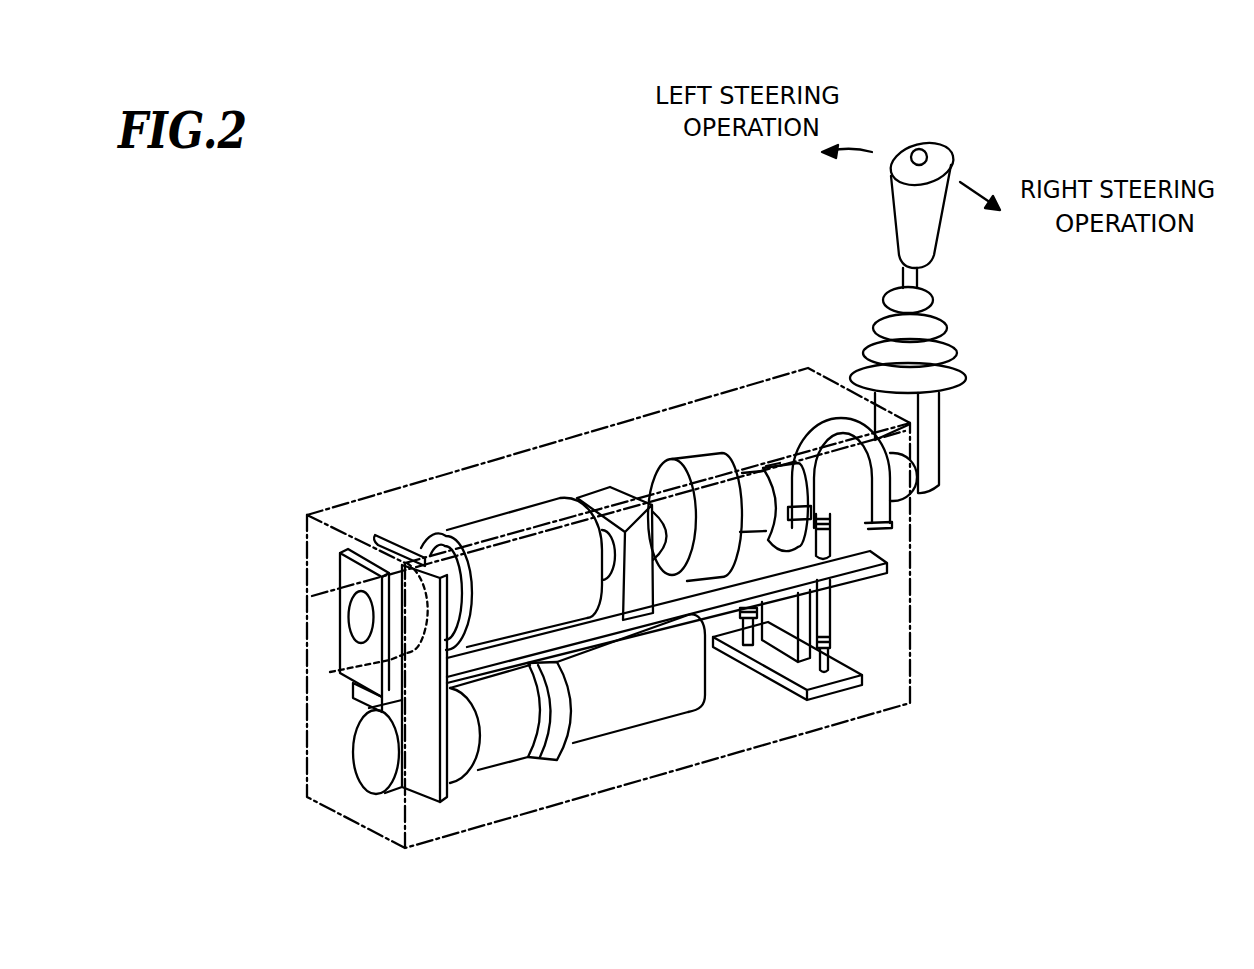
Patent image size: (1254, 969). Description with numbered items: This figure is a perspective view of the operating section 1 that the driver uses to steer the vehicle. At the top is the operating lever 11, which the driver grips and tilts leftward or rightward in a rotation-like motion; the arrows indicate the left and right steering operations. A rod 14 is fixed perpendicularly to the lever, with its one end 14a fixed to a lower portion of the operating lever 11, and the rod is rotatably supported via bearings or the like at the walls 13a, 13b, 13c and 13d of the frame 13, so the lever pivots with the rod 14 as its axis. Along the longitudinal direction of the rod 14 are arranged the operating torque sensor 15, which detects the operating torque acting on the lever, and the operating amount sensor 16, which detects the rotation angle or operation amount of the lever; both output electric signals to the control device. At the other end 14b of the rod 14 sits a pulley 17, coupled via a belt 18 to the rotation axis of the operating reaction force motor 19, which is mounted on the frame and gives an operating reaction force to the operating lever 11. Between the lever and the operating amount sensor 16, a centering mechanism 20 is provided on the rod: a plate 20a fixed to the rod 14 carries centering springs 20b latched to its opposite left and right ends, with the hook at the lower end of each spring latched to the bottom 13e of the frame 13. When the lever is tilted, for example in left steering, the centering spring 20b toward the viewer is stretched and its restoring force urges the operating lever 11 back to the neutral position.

The operating section 1 is at (538, 256).
The operating lever 11 is at (926, 230).
The frame 13 is at (690, 615).
The wall of the frame 13a is at (880, 443).
The wall of the frame 13b is at (640, 605).
The wall of the frame 13c is at (393, 532).
The wall of the frame 13d is at (356, 576).
The bottom of the frame 13e is at (842, 668).
The rod 14 is at (744, 490).
The one end of the rod 14a is at (906, 482).
The other end of the rod 14b is at (362, 618).
The operating torque sensor 15 is at (482, 527).
The operating amount sensor 16 is at (682, 467).
The pulley 17 is at (330, 672).
The belt 18 is at (352, 714).
The operating reaction force motor 19 is at (505, 732).
The centering mechanism 20 is at (767, 456).
The plate 20a is at (783, 466).
The centering spring 20b is at (832, 642).